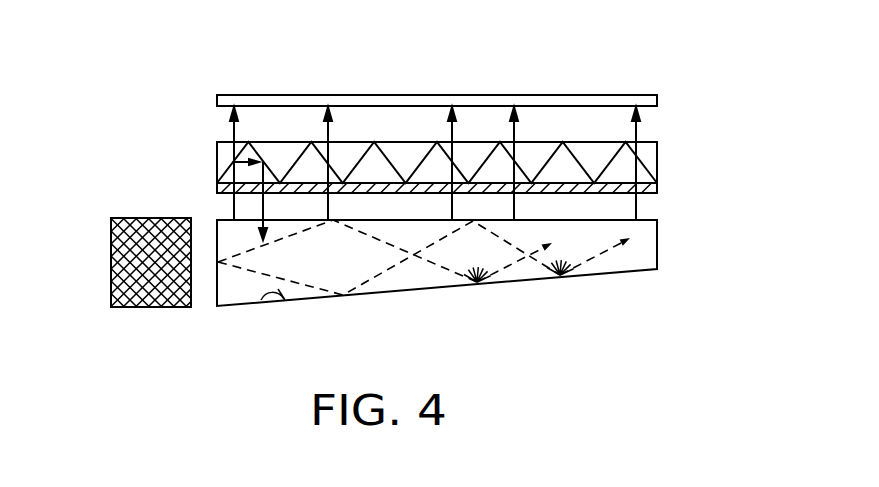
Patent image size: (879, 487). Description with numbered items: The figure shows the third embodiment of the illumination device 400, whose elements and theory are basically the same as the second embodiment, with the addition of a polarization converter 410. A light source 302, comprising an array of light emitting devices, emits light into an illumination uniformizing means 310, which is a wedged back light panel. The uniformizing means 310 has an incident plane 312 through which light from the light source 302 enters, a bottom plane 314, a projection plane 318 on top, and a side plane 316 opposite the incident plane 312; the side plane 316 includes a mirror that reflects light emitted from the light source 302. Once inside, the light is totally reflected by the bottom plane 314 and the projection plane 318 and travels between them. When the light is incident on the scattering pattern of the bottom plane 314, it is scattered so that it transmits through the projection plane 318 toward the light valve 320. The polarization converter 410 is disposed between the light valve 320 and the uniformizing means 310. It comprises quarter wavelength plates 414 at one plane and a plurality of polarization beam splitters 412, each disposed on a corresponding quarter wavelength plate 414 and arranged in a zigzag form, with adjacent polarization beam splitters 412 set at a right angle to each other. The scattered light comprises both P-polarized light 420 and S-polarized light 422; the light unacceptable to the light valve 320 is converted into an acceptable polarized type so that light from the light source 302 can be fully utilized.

The backlight module 400 is at (433, 54).
The light source 302 is at (112, 263).
The illumination uniformizing means 310 is at (464, 300).
The incident plane 312 is at (216, 286).
The bottom plane 314 is at (261, 300).
The side plane 316 is at (657, 255).
The projection plane 318 is at (580, 220).
The light valve 320 is at (645, 96).
The polarization converter 410 is at (483, 146).
The polarization beam splitter 412 is at (634, 170).
The ¼ wavelength plate 414 is at (657, 190).
The P-polarized light 420 is at (233, 133).
The S-polarized light 422 is at (240, 162).